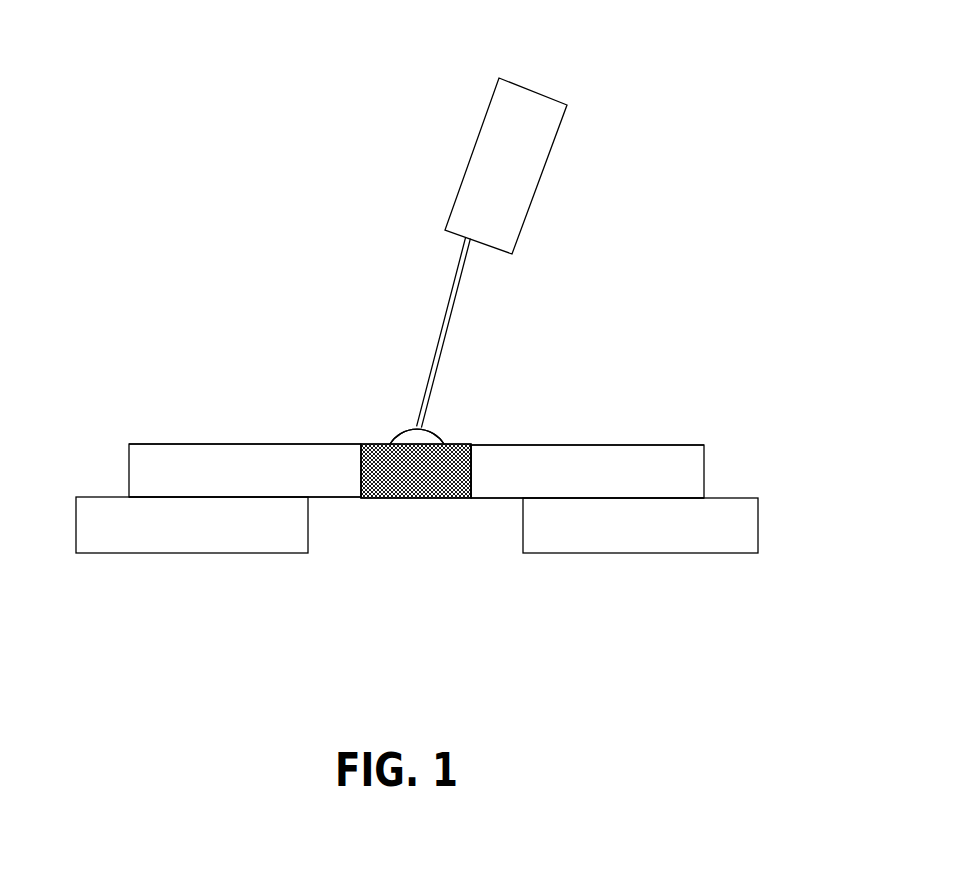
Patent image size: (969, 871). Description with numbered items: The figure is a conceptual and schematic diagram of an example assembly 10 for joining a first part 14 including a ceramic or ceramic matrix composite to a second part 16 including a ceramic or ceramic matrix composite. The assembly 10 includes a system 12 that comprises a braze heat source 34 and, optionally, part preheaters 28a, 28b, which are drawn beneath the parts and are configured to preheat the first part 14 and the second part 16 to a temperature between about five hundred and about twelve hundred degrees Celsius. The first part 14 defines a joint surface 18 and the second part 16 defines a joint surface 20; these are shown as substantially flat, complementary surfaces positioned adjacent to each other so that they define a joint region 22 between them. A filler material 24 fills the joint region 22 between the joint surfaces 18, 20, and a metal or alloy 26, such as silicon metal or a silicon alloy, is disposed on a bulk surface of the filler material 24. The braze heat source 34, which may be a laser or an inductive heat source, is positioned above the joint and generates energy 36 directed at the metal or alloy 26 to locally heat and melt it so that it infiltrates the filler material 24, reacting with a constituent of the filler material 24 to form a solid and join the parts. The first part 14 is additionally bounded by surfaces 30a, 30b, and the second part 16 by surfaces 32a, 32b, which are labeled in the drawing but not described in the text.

The assembly 10 is at (129, 121).
The system 12 is at (277, 269).
The first part 14 is at (128, 470).
The second part 16 is at (705, 472).
The joint surface 18 is at (361, 470).
The joint surface 20 is at (472, 470).
The joint region 22 is at (384, 437).
The filler material 24 is at (447, 457).
The metal or alloy 26 is at (412, 434).
The part preheater 28a is at (85, 526).
The part preheater 28b is at (740, 525).
The first upper surface 30a is at (195, 444).
The first lower surface 30b is at (186, 498).
The second upper surface 32a is at (660, 445).
The second lower surface 32b is at (668, 500).
The braze heat source 34 is at (556, 110).
The energy 36 is at (447, 312).